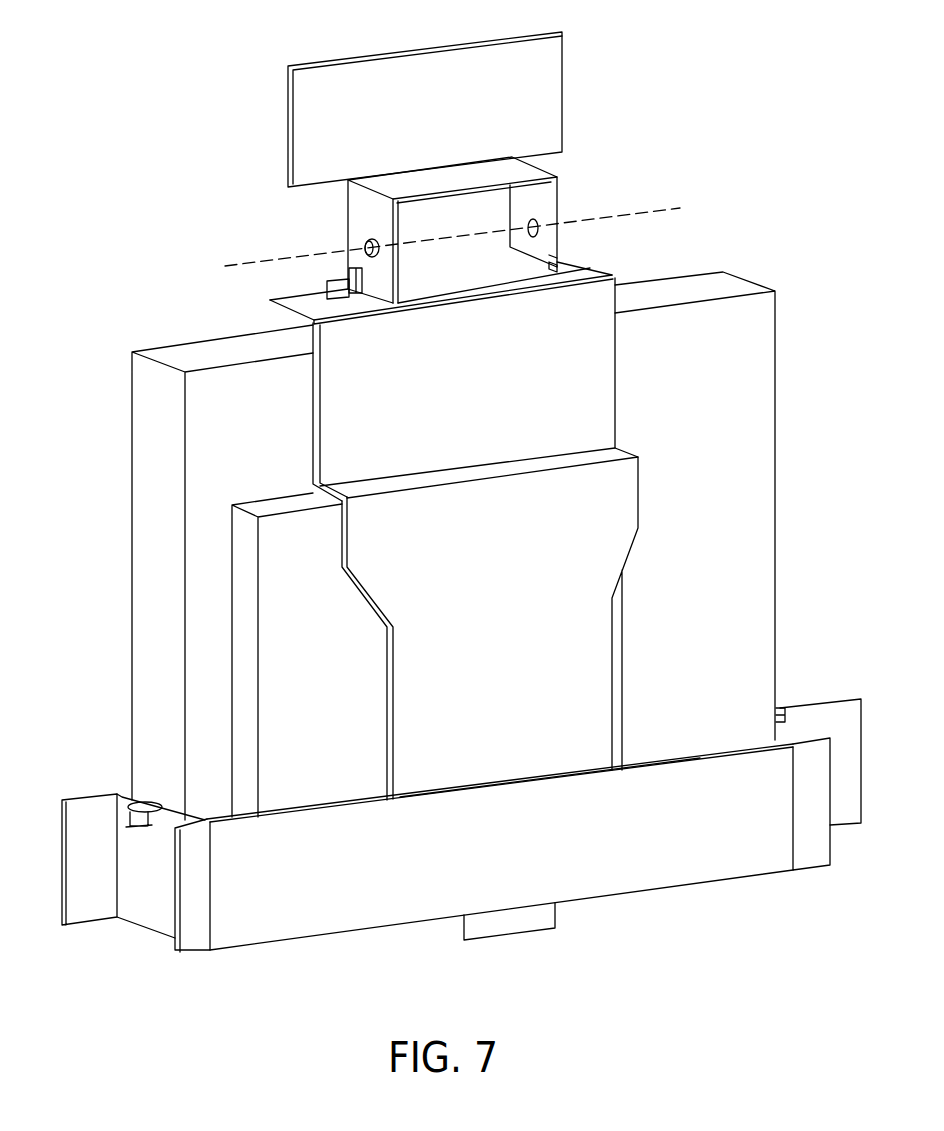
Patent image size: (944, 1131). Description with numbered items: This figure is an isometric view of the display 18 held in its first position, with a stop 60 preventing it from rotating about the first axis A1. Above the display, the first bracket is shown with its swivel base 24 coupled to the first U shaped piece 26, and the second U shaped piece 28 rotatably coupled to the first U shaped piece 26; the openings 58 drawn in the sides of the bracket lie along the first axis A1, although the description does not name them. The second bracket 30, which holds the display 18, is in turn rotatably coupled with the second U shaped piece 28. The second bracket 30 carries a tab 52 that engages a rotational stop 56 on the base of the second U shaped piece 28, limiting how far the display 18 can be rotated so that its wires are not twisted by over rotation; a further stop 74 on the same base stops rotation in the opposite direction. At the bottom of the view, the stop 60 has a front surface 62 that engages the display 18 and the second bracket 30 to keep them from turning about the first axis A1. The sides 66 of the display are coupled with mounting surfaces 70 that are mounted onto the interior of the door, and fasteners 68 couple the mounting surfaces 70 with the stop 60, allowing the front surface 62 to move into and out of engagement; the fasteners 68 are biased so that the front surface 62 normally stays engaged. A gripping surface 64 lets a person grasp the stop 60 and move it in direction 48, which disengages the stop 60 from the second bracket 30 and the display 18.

The display 18 is at (184, 352).
The swivel base 24 is at (565, 92).
The first U shaped piece 26 is at (562, 178).
The second U shaped piece 28 is at (560, 258).
The second bracket 30 is at (512, 730).
The direction 48 is at (412, 1000).
The tab 52 is at (328, 287).
The rotational stop 56 is at (592, 276).
The holes 58 is at (365, 248).
The stop 60 is at (278, 948).
The front surface 62 is at (746, 880).
The gripping surface 64 is at (523, 934).
The sides 66 is at (140, 918).
The fasteners 68 is at (135, 803).
The mounting surfaces 70 is at (84, 927).
The stop 74 is at (345, 272).
The first axis A1 is at (230, 264).